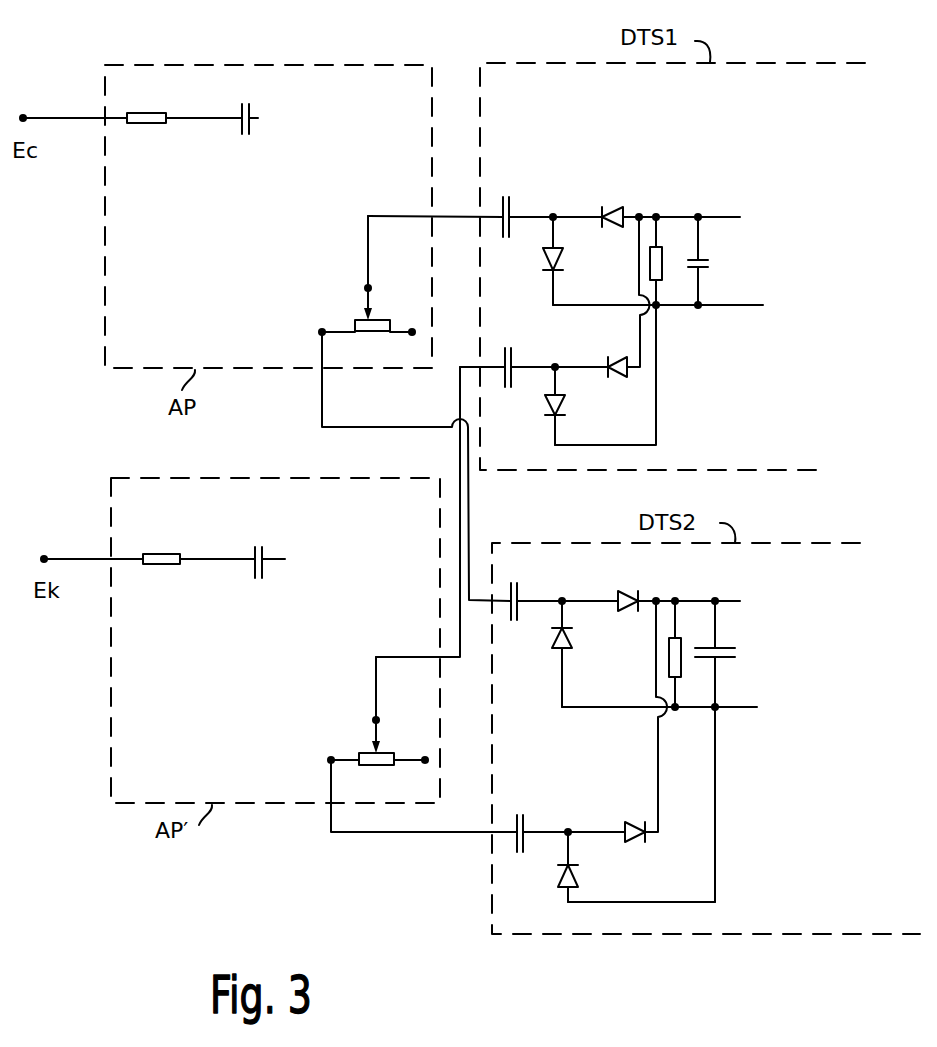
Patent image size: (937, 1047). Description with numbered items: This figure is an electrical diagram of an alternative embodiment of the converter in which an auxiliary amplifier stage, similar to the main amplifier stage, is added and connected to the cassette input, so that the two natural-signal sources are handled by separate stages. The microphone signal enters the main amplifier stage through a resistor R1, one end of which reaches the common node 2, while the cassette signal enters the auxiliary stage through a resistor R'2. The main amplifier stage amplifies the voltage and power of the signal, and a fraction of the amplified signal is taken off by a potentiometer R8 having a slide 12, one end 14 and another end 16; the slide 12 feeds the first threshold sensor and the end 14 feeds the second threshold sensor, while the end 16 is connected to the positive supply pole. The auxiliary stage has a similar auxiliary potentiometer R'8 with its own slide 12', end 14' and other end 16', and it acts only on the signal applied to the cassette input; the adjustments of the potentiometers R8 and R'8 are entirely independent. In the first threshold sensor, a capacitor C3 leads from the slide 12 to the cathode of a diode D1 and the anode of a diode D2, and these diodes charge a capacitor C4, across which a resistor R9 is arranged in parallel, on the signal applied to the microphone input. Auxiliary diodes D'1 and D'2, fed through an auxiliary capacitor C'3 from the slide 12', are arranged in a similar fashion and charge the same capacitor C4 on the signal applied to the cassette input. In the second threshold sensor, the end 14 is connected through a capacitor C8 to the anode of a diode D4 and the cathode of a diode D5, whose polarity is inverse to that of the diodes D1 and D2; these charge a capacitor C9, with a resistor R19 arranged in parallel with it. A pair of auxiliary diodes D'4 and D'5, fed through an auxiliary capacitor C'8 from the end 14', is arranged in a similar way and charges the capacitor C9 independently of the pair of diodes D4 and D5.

The common node 2 is at (190, 114).
The slide of the potentiometer 12 is at (342, 268).
The end of the potentiometer 14 is at (309, 325).
The other end of the potentiometer 16 is at (405, 312).
The slide of the auxiliary potentiometer 12' is at (356, 705).
The end of the auxiliary potentiometer 14' is at (317, 751).
The other end of the auxiliary potentiometer 16' is at (416, 744).
The resistor R1 is at (146, 105).
The resistor R'2 is at (161, 583).
The potentiometer R8 is at (371, 340).
The auxiliary potentiometer R'8 is at (376, 774).
The capacitor C3 is at (510, 210).
The auxiliary capacitor C'3 is at (531, 356).
The diode D1 is at (615, 232).
The diode D2 is at (568, 261).
The auxiliary diode D'1 is at (626, 383).
The auxiliary diode D'2 is at (573, 406).
The resistor R9 is at (667, 261).
The capacitor C4 is at (706, 258).
The capacitor C8 is at (518, 590).
The auxiliary capacitor C'8 is at (543, 821).
The diode D4 is at (623, 616).
The diode D5 is at (574, 654).
The auxiliary diode D'4 is at (628, 817).
The auxiliary diode D'5 is at (592, 867).
The resistor R19 is at (686, 654).
The capacitor C9 is at (718, 662).